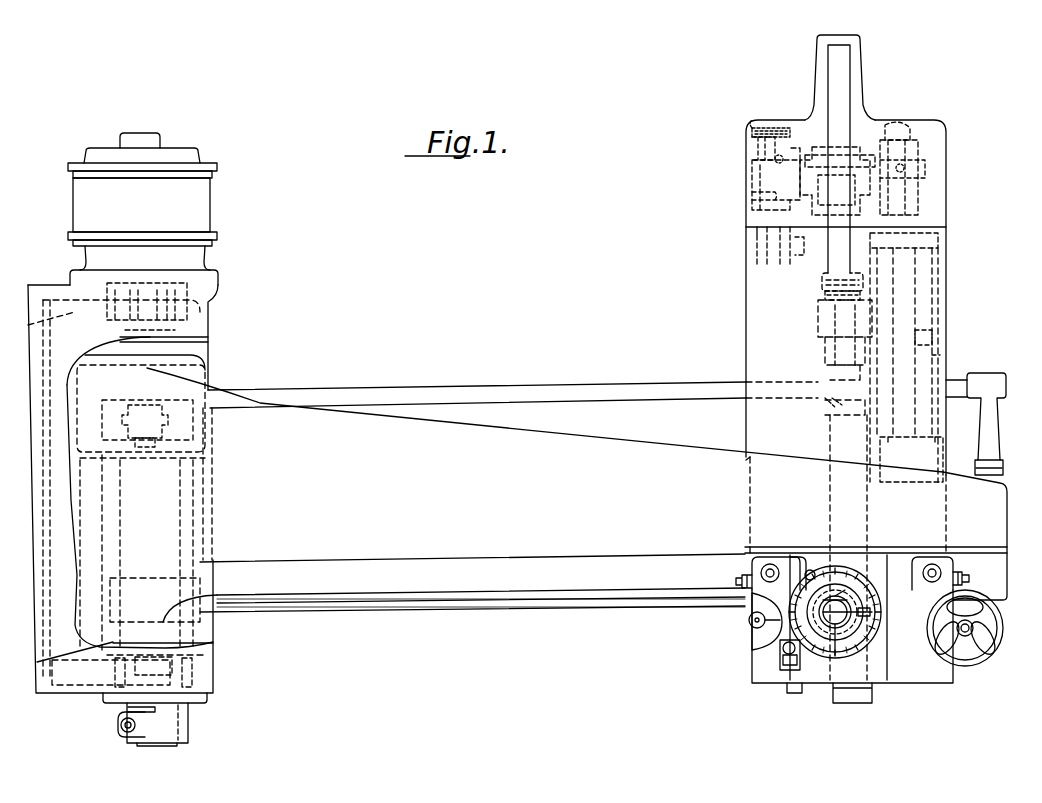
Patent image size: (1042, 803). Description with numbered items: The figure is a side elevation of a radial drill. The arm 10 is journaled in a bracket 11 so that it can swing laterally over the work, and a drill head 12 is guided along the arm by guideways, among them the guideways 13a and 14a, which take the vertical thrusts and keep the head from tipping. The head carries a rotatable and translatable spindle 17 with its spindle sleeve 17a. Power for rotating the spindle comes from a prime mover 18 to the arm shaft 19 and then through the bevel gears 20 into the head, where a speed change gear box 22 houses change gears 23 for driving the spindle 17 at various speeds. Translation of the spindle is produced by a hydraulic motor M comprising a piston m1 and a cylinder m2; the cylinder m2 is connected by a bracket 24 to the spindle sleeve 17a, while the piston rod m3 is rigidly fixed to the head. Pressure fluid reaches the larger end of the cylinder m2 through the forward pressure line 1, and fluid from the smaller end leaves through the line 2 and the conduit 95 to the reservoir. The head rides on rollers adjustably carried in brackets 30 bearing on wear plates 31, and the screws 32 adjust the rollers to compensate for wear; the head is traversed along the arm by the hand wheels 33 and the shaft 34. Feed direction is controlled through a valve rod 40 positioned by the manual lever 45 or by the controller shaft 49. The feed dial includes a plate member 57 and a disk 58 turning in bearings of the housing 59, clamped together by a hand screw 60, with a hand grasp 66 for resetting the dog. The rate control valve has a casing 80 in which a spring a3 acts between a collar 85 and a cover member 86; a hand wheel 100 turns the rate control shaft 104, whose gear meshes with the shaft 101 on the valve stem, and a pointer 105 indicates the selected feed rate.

The forward pressure line 1 is at (912, 132).
The line 2 is at (905, 168).
The arm 10 is at (577, 484).
The bracket 11 is at (207, 660).
The drill head 12 is at (746, 310).
The guideway 13a is at (555, 594).
The lower guide 14a is at (553, 610).
The spindle 17 is at (853, 70).
The spindle sleeve 17a is at (867, 505).
The prime mover 18 is at (143, 209).
The arm shaft 19 is at (478, 388).
The bevel gears 20 is at (830, 410).
The speed change gear box 22 is at (946, 182).
The change gears 23 is at (810, 227).
The bracket 24 is at (818, 318).
The bracket 30 is at (878, 600).
The wear plate 31 is at (489, 594).
The screw 32 is at (737, 580).
The hand wheel 33 is at (975, 655).
The shaft 34 is at (972, 630).
The valve rod 40 is at (795, 250).
The lever 45 is at (780, 660).
The shaft 49 is at (828, 488).
The plate member 57 is at (855, 598).
The disk 58 is at (875, 640).
The housing 59 is at (805, 565).
The hand screw 60 is at (870, 614).
The hand grasp 66 is at (838, 640).
The casing 80 is at (752, 182).
The collar 85 is at (770, 128).
The cover member 86 is at (752, 150).
The conduit 95 is at (775, 160).
The hand wheel 100 is at (752, 630).
The shaft 101 is at (757, 240).
The rate control shaft 104 is at (749, 620).
The pointer 105 is at (783, 648).
The hydraulic motor M is at (946, 295).
The piston m1 is at (880, 455).
The cylinder m2 is at (940, 350).
The piston rod m3 is at (932, 330).
The spring a3 is at (746, 133).